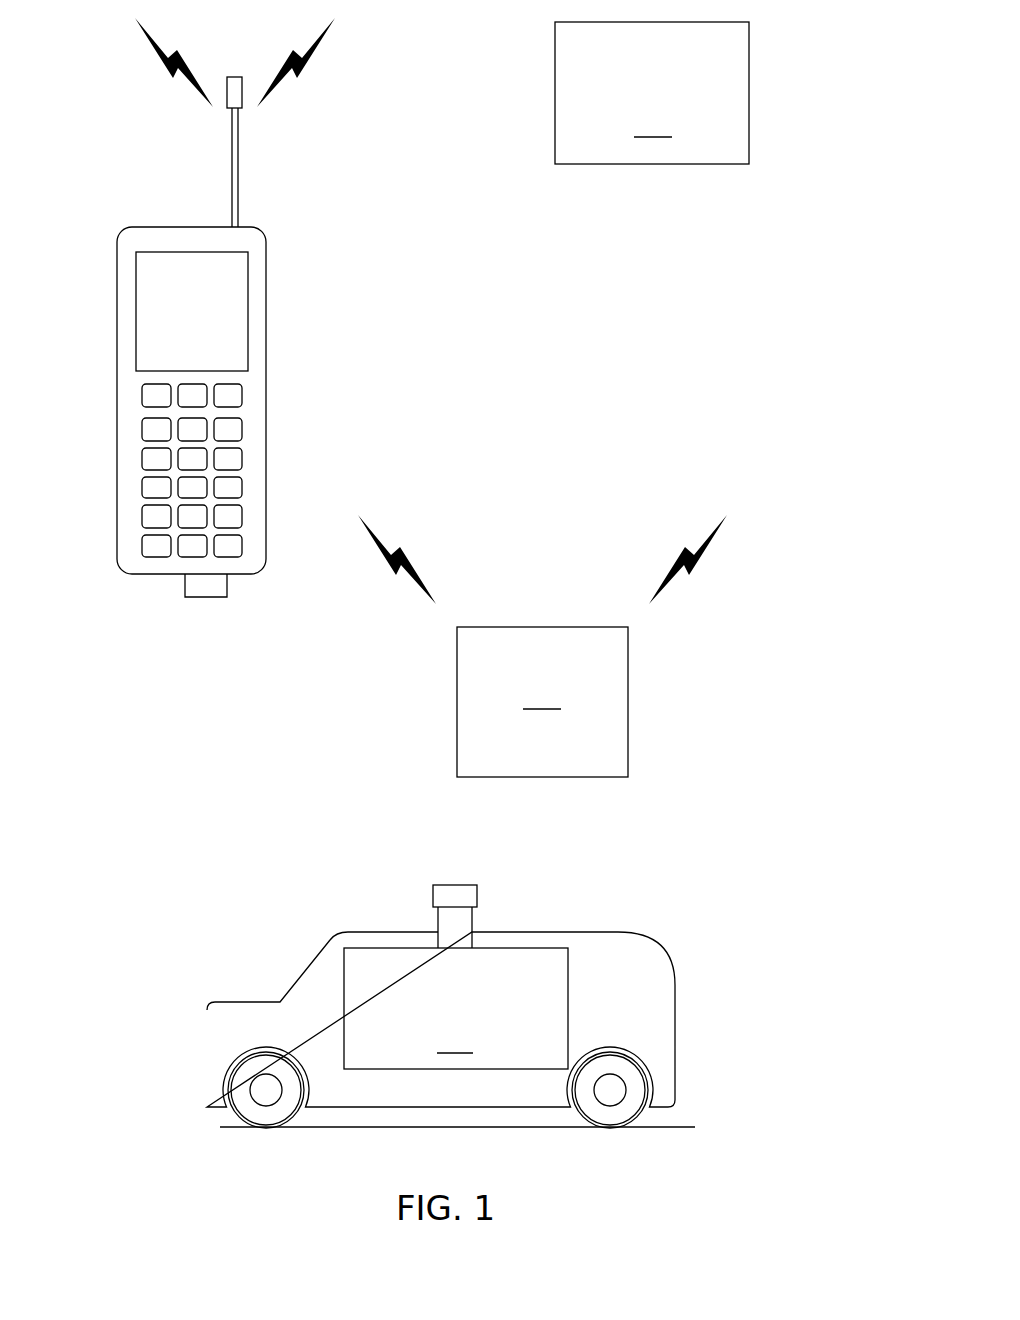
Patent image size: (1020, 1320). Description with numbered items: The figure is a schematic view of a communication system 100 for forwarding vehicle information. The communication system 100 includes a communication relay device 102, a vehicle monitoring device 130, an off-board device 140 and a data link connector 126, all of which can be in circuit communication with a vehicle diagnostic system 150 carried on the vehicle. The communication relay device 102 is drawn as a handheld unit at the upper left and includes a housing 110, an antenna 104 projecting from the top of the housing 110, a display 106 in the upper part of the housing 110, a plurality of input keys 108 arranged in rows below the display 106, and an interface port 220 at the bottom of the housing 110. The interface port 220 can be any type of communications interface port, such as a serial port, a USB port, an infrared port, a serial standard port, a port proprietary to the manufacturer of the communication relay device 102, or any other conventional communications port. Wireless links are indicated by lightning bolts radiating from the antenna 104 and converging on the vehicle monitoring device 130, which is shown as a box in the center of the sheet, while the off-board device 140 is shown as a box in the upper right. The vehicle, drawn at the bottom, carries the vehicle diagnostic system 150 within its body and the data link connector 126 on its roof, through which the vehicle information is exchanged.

The communication system 100 is at (598, 466).
The communication relay device 102 is at (312, 270).
The antenna 104 is at (238, 163).
The display 106 is at (248, 338).
The plurality of input keys 108 is at (242, 428).
The housing 110 is at (266, 390).
The data link connector (DLC) 126 is at (477, 896).
The vehicle monitoring device 130 is at (542, 702).
The off-board device 140 is at (652, 93).
The vehicle diagnostic system 150 is at (456, 1008).
The interface port 220 is at (227, 588).